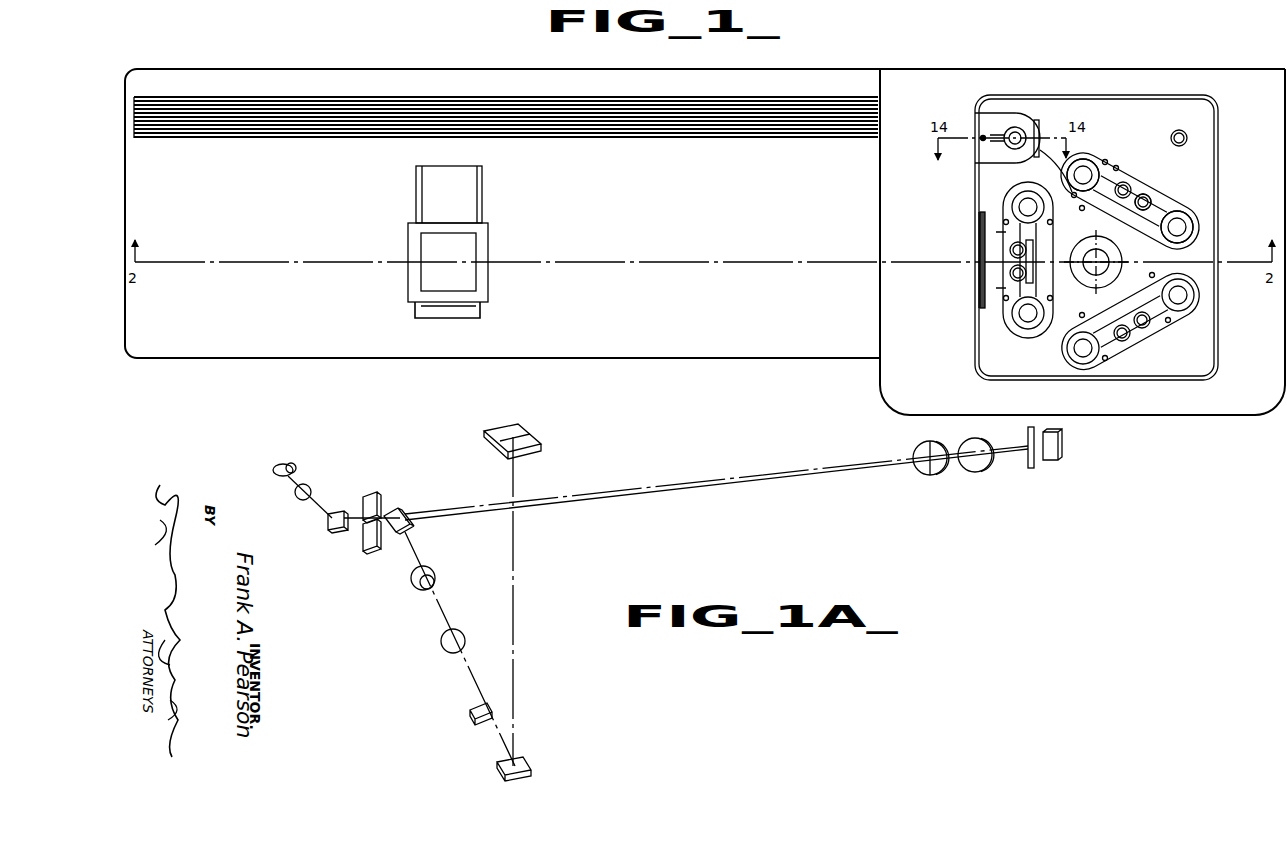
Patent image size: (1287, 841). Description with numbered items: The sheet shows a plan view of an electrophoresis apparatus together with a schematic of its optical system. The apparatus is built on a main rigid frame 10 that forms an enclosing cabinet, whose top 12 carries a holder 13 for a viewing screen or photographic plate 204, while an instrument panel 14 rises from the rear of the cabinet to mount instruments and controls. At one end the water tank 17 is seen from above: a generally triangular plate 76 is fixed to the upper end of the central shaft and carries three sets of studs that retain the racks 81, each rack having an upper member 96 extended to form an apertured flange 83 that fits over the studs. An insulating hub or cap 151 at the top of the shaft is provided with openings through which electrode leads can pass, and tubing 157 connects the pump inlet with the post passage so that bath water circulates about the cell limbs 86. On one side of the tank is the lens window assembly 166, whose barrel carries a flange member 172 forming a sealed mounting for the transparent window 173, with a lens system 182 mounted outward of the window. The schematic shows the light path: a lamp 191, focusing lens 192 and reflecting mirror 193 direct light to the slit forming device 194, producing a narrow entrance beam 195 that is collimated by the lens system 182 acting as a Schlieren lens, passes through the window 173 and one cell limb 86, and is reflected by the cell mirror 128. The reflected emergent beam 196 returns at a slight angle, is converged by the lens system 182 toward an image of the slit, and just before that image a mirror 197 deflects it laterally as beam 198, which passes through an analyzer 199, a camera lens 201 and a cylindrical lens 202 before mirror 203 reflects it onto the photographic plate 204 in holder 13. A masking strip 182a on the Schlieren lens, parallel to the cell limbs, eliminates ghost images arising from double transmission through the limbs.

In FIG. 1, the main rigid frame 10 is at (777, 360).
In FIG. 1, the top of the cabinet 12 is at (692, 338).
In FIG. 1, the holder 13 is at (487, 213).
In FIG. 1A, the holder 13 is at (507, 424).
In FIG. 1, the instrument panel 14 is at (298, 112).
In FIG. 1, the water tank 17 is at (1200, 327).
In FIG. 1, the plate 76 is at (1165, 204).
In FIG. 1, the racks 81 is at (1015, 332).
In FIG. 1, the flange 83 is at (1097, 218).
In FIG. 1A, the cell limbs 86 is at (1030, 470).
In FIG. 1, the upper member 96 is at (1145, 193).
In FIG. 1A, the cell mirror 128 is at (1062, 453).
In FIG. 1, the insulating hub or cap 151 is at (1085, 278).
In FIG. 1, the tubing 157 is at (1050, 160).
In FIG. 1, the lens window assembly 166 is at (979, 232).
In FIG. 1, the flange member 172 is at (978, 280).
In FIG. 1A, the transparent window 173 is at (980, 468).
In FIG. 1A, the lens system 182 is at (911, 446).
In FIG. 1A, the masking strip 182a is at (921, 472).
In FIG. 1A, the lamp 191 is at (280, 466).
In FIG. 1A, the focusing lens 192 is at (297, 499).
In FIG. 1A, the reflecting mirror 193 is at (336, 532).
In FIG. 1A, the slit forming device 194 is at (373, 498).
In FIG. 1A, the entrance beam 195 is at (620, 491).
In FIG. 1A, the reflected emergent beam 196 is at (678, 492).
In FIG. 1A, the mirror 197 is at (405, 510).
In FIG. 1A, the deflected beam 198 is at (445, 612).
In FIG. 1A, the analyzer 199 is at (411, 586).
In FIG. 1A, the camera lens 201 is at (447, 650).
In FIG. 1A, the cylindrical lens 202 is at (474, 720).
In FIG. 1A, the mirror 203 is at (522, 764).
In FIG. 1, the photographic plate 204 is at (466, 253).
In FIG. 1A, the photographic plate 204 is at (522, 437).